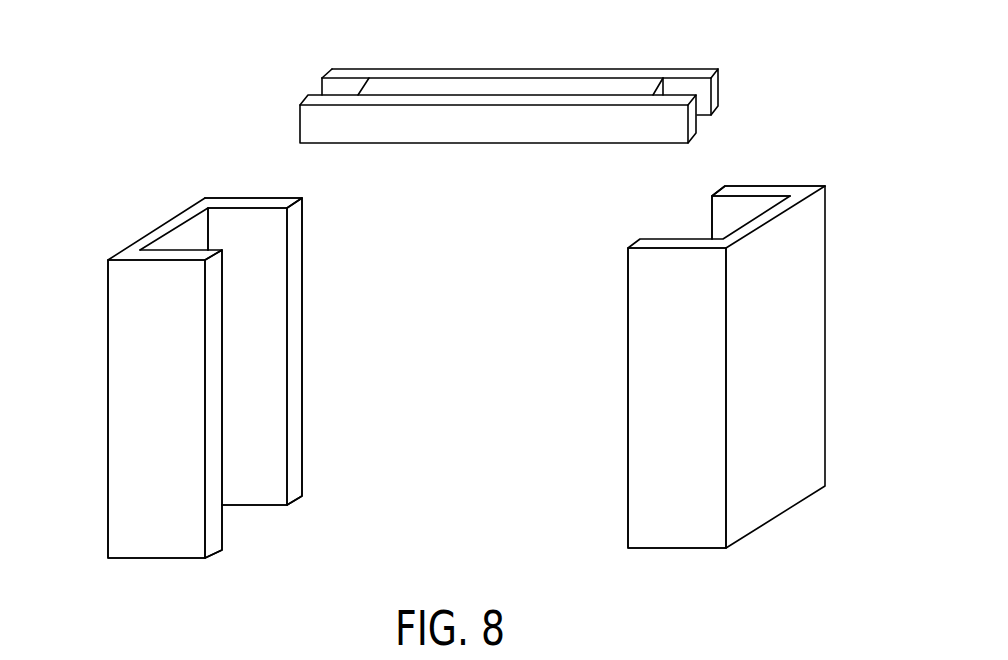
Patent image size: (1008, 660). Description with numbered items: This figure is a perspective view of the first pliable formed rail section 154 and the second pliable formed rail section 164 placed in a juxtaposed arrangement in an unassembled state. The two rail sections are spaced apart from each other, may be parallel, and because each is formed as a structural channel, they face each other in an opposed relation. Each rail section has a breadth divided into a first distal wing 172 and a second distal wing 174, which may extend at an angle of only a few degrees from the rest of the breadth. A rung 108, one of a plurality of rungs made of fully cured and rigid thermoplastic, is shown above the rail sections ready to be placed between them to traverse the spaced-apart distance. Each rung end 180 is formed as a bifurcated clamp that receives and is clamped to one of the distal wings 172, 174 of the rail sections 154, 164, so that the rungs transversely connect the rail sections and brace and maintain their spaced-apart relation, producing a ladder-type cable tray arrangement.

The rung 108 is at (520, 143).
The rung end 180 is at (310, 123).
The first pliable formed rail section 154 is at (108, 388).
The second pliable formed rail section 164 is at (813, 352).
The first distal wing 172 is at (228, 203).
The second distal wing 174 is at (162, 560).